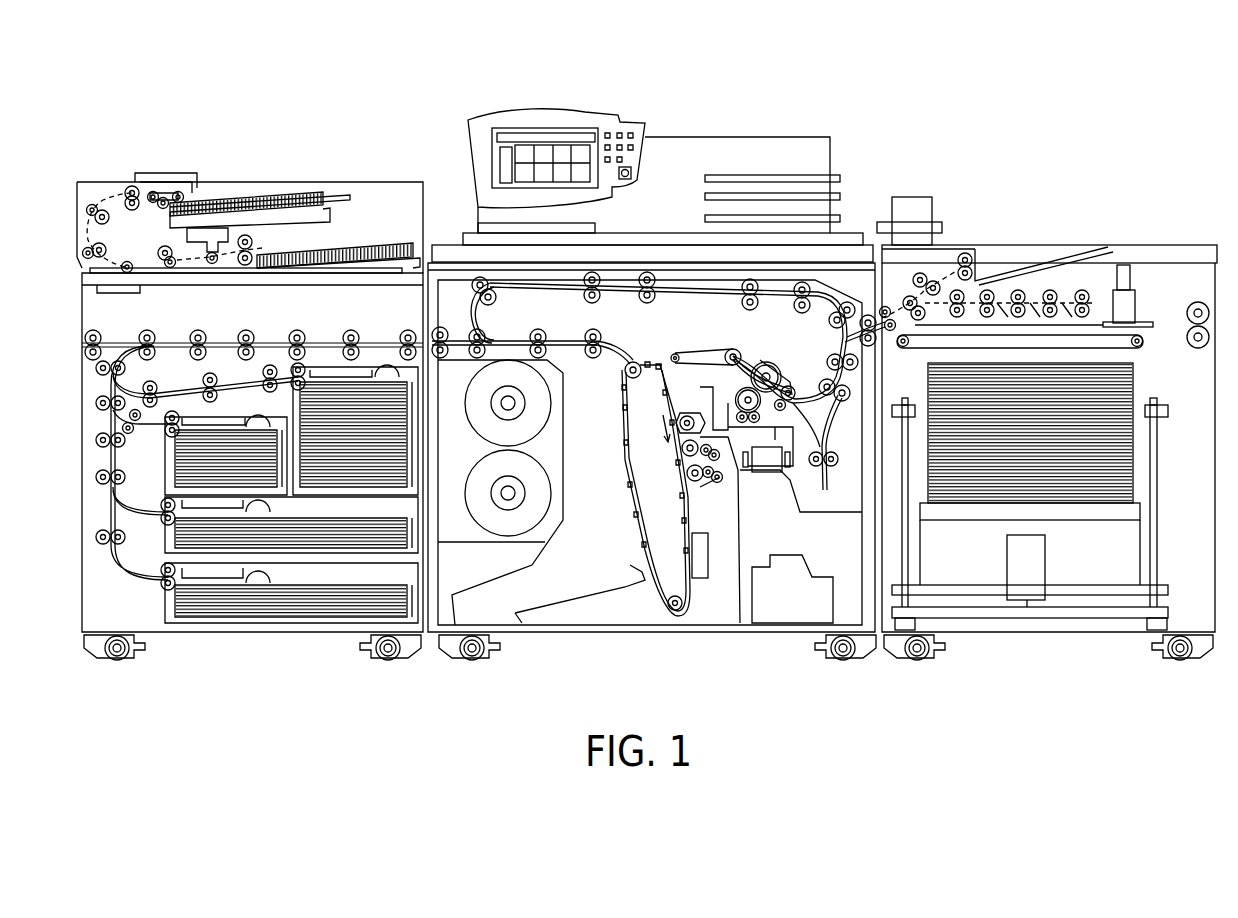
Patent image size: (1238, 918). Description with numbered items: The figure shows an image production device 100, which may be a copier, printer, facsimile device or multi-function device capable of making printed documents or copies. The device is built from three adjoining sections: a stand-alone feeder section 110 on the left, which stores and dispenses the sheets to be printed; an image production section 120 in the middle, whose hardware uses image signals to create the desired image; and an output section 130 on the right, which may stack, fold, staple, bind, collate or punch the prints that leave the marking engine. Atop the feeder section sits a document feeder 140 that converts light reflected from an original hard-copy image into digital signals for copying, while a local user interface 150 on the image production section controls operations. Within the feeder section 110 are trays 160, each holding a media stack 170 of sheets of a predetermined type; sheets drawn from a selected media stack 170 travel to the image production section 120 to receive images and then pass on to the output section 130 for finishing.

The image production device 100 is at (1020, 126).
The feeder section 110 is at (168, 634).
The image production section 120 is at (605, 634).
The output section 130 is at (1040, 634).
The document feeder 140 is at (376, 182).
The local user interface 150 is at (729, 140).
The tray 160 is at (165, 594).
The media stack 170 is at (385, 457).